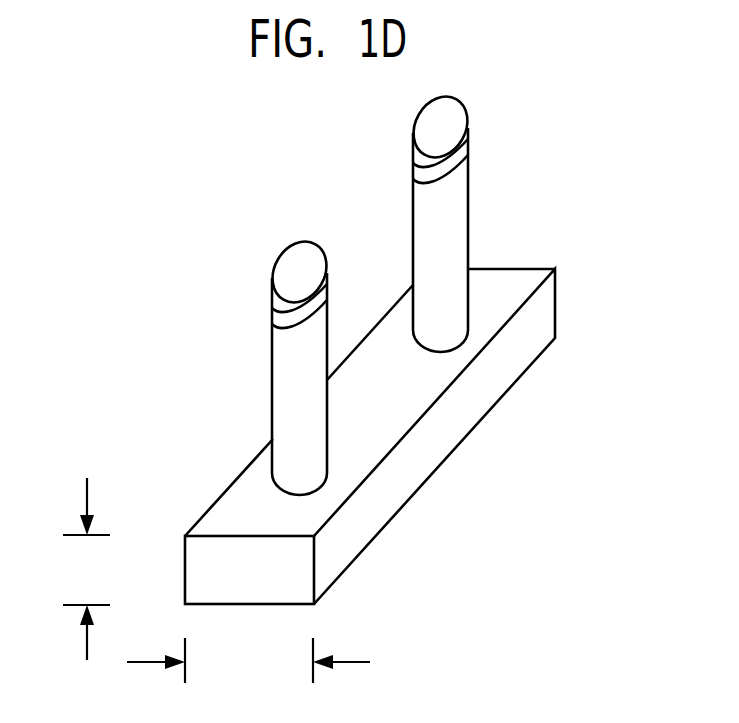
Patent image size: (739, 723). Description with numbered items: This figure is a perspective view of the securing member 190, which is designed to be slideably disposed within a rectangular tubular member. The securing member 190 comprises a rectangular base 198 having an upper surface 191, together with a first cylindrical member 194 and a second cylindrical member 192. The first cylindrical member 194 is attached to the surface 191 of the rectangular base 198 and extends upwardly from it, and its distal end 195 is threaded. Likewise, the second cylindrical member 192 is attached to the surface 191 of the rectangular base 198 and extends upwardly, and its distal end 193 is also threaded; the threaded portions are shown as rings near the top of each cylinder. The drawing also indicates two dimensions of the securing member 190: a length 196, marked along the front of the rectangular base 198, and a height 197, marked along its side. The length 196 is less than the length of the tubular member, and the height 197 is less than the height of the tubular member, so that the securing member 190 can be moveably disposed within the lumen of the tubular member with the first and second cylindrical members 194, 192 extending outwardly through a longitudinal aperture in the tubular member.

The securing member 190 is at (523, 535).
The surface 191 is at (368, 360).
The second cylindrical member 192 is at (470, 213).
The distal end 193 is at (470, 152).
The first cylindrical member 194 is at (271, 375).
The distal end 195 is at (271, 312).
The length 196 is at (248, 660).
The height 197 is at (86, 569).
The rectangular base 198 is at (435, 464).